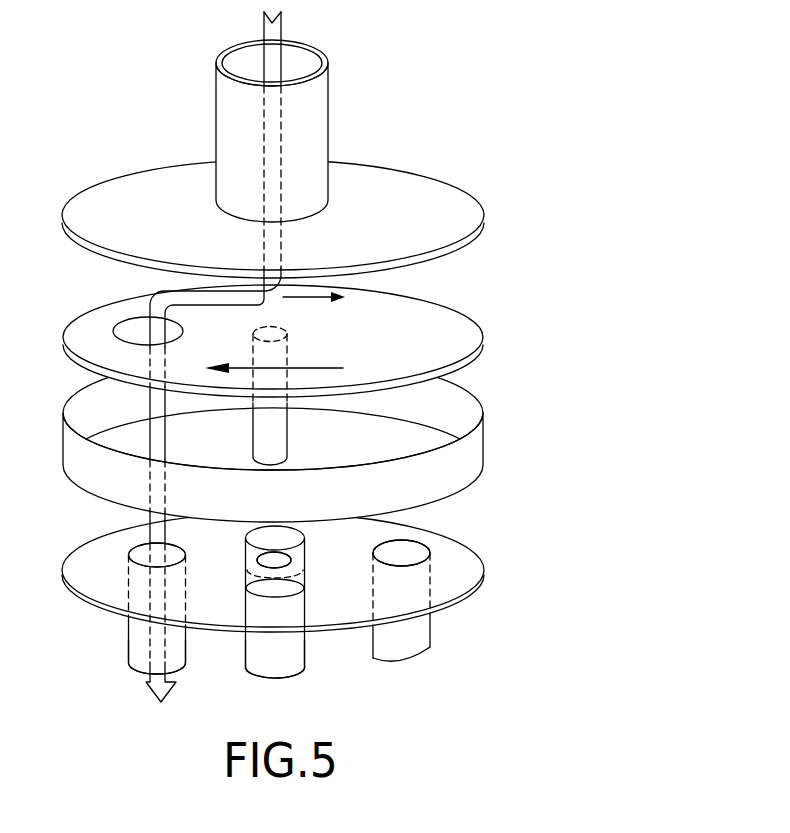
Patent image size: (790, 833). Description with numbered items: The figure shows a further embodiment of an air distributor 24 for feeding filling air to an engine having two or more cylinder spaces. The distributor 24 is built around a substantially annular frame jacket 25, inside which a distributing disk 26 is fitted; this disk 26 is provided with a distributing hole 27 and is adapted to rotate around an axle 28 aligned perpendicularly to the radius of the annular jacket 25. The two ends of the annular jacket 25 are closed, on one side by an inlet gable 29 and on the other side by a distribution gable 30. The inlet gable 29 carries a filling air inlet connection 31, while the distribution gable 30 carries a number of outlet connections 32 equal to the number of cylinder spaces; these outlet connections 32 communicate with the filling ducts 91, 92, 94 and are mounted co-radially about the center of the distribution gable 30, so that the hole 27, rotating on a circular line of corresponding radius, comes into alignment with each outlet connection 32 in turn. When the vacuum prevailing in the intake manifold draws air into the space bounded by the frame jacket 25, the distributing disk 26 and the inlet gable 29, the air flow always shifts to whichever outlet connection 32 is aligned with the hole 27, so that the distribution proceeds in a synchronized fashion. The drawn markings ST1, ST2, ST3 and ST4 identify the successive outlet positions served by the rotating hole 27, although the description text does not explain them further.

The air distributor 24 is at (287, 367).
The annular frame jacket 25 is at (463, 456).
The distributing disk 26 is at (460, 320).
The distributing hole 27 is at (128, 332).
The axle 28 is at (286, 428).
The inlet gable 29 is at (428, 185).
The distribution gable 30 is at (378, 538).
The filling air inlet connection 31 is at (317, 100).
The outlet connection 32 is at (138, 623).
The filling duct 91 is at (131, 665).
The filling duct 92 is at (261, 657).
The filling duct 94 is at (417, 630).
The station 1 ST1 is at (180, 571).
The station 2 ST2 is at (305, 628).
The station 3 ST3 is at (292, 558).
The station 4 ST4 is at (398, 575).